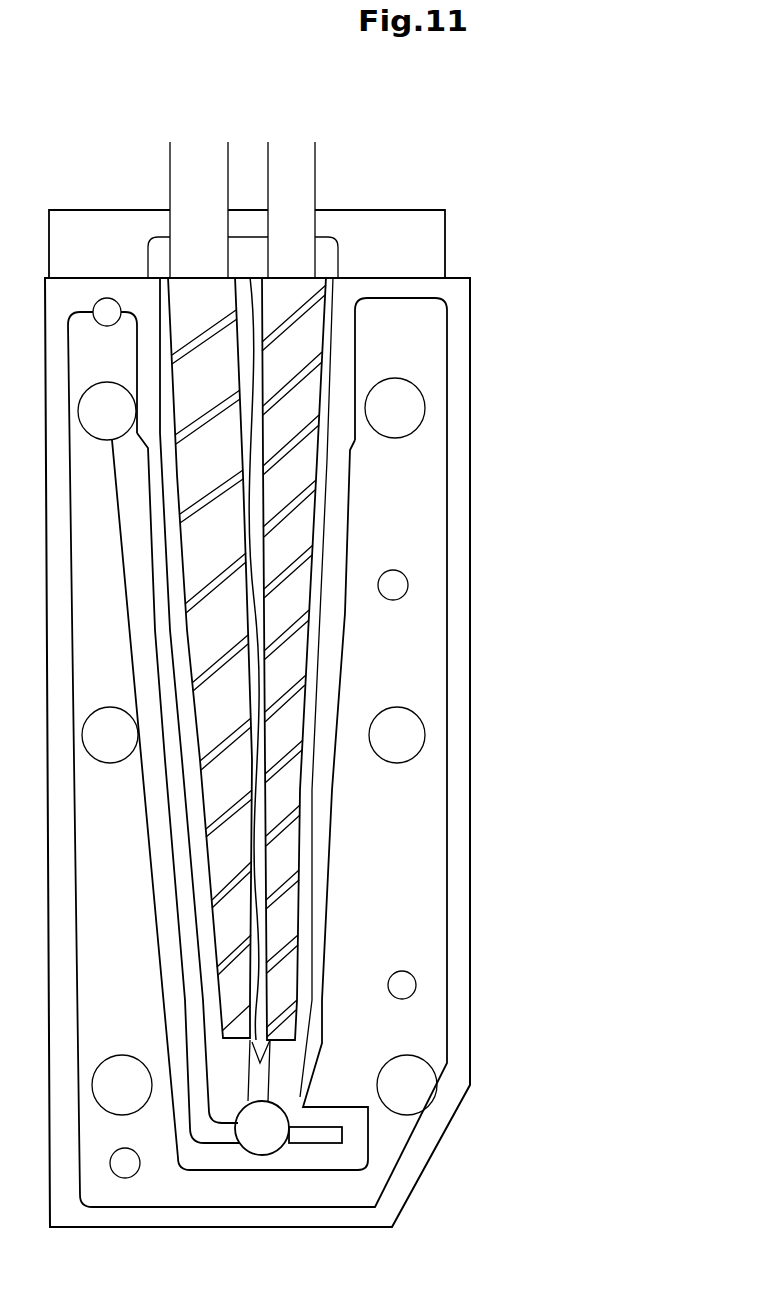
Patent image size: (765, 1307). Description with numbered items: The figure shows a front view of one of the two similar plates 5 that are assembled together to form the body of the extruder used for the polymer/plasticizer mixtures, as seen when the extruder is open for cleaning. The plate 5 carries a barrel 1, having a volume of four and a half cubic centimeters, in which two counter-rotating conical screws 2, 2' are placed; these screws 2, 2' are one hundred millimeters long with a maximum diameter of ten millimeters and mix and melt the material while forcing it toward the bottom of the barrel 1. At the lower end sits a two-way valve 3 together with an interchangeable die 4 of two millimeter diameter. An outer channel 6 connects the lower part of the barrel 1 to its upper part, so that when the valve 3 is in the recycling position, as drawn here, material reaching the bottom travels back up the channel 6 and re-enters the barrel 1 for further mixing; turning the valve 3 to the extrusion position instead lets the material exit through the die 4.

The barrel 1 is at (250, 345).
The counter-rotating conical screw 2 is at (452, 658).
The counter-rotating conical screw 2' is at (412, 657).
The two-way valve 3 is at (285, 1103).
The interchangeable die 4 is at (345, 1135).
The plate 5 is at (474, 297).
The channel 6 is at (166, 603).